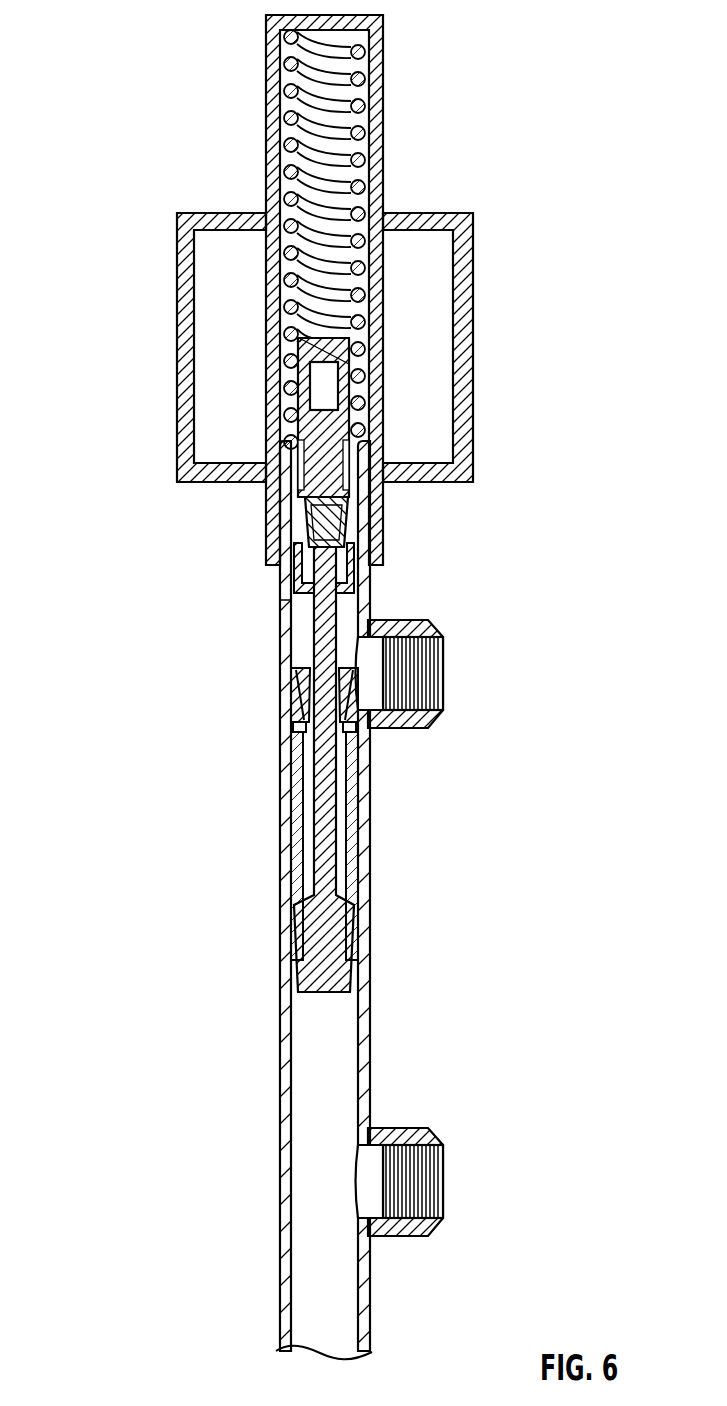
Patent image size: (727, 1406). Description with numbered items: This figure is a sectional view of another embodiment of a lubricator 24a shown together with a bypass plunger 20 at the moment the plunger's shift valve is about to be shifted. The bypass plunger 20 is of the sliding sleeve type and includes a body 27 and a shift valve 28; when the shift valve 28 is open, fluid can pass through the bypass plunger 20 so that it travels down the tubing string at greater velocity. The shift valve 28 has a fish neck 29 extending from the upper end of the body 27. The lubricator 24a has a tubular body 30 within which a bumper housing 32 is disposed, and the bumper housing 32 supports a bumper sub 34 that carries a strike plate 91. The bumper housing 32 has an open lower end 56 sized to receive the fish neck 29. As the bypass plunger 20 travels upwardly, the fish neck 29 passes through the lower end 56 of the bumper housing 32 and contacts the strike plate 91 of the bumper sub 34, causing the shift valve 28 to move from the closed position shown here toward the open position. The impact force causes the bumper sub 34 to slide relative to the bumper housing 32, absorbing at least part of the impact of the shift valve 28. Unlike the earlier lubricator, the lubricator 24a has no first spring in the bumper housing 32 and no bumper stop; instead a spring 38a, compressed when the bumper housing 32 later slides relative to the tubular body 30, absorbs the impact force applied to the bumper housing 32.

The lubricator 24a is at (128, 135).
The spring 38a is at (365, 157).
The tubular body 30 is at (266, 525).
The bumper sub 34 is at (335, 488).
The fish neck 29 is at (340, 518).
The strike plate 91 is at (285, 552).
The bumper housing 32 is at (293, 572).
The lower end 56 is at (363, 602).
The body 27 is at (295, 765).
The shift valve 28 is at (322, 888).
The bypass plunger 20 is at (363, 922).